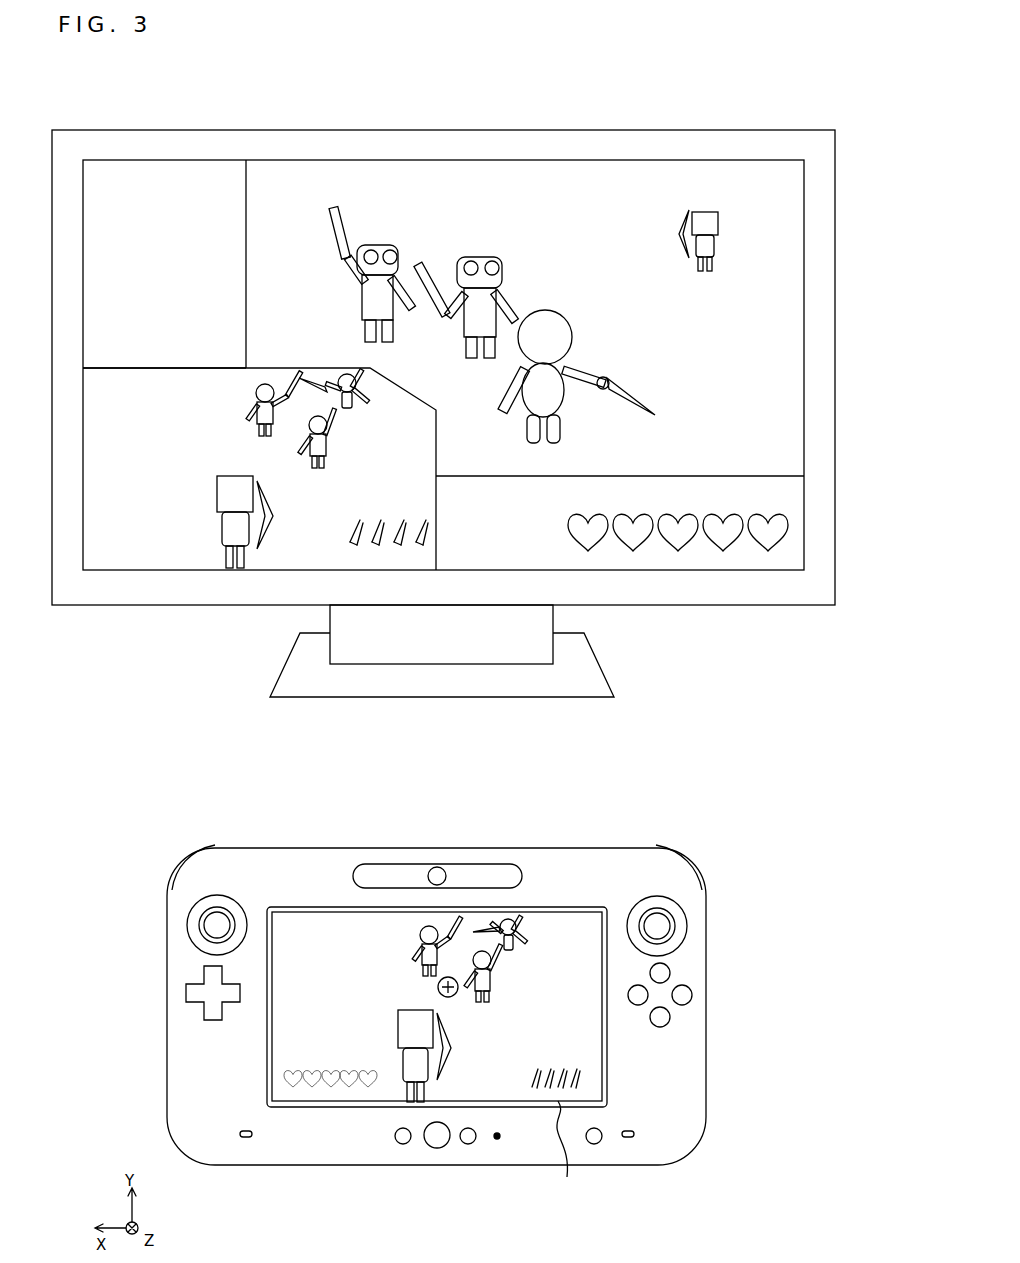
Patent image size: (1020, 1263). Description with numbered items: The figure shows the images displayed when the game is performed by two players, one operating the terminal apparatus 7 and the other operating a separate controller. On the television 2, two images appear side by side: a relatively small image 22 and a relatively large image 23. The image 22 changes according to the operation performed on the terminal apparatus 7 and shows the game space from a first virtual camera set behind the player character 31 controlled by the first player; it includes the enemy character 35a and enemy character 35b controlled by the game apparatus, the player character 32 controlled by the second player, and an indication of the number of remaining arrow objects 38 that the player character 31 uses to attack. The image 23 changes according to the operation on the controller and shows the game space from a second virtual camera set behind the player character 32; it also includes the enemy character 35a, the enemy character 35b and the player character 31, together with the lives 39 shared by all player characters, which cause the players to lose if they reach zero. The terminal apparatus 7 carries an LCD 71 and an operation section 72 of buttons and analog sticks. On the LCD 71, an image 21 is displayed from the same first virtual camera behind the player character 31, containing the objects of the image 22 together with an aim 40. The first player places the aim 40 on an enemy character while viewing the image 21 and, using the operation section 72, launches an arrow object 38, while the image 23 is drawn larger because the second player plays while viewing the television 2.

The television 2 is at (595, 131).
The terminal apparatus 7 is at (584, 848).
The image 21 is at (437, 1007).
The image 22 is at (259, 469).
The image 23 is at (190, 264).
The player character 31 is at (716, 215).
The player character 32 is at (556, 314).
The enemy character 35a is at (484, 258).
The enemy character 35b is at (384, 238).
The arrow objects 38 is at (358, 536).
The lives 39 is at (568, 504).
The aim 40 is at (458, 993).
The LCD 71 is at (566, 1149).
The operation section 72 is at (177, 922).